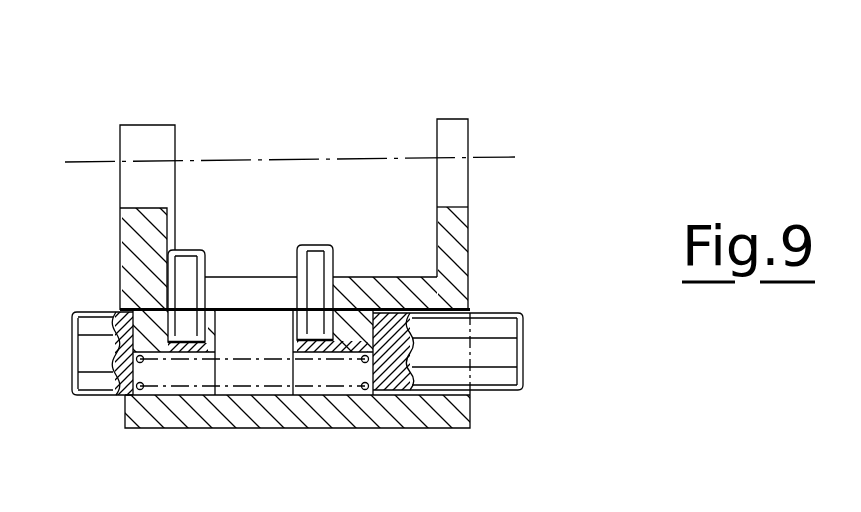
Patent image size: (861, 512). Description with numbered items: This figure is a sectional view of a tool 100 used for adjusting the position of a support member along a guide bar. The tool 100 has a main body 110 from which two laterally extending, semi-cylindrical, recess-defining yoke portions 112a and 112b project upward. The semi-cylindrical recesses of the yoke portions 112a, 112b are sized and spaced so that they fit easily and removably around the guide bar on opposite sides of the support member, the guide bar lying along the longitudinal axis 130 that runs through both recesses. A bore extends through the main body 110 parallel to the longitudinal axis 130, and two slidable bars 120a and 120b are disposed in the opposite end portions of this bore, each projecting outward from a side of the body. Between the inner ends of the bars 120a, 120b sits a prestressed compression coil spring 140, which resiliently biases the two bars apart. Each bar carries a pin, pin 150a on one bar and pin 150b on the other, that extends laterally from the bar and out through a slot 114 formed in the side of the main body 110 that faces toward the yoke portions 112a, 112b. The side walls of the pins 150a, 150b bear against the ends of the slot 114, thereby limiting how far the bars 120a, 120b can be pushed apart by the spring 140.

The tool 100 is at (274, 112).
The main body 110 is at (315, 418).
The yoke portion 112a is at (140, 126).
The yoke portion 112b is at (457, 130).
The slot 114 is at (262, 289).
The slidable bar 120a is at (93, 386).
The slidable bar 120b is at (504, 347).
The longitudinal axis 130 is at (78, 162).
The compression coil spring 140 is at (264, 389).
The pin 150a is at (203, 249).
The pin 150b is at (317, 262).